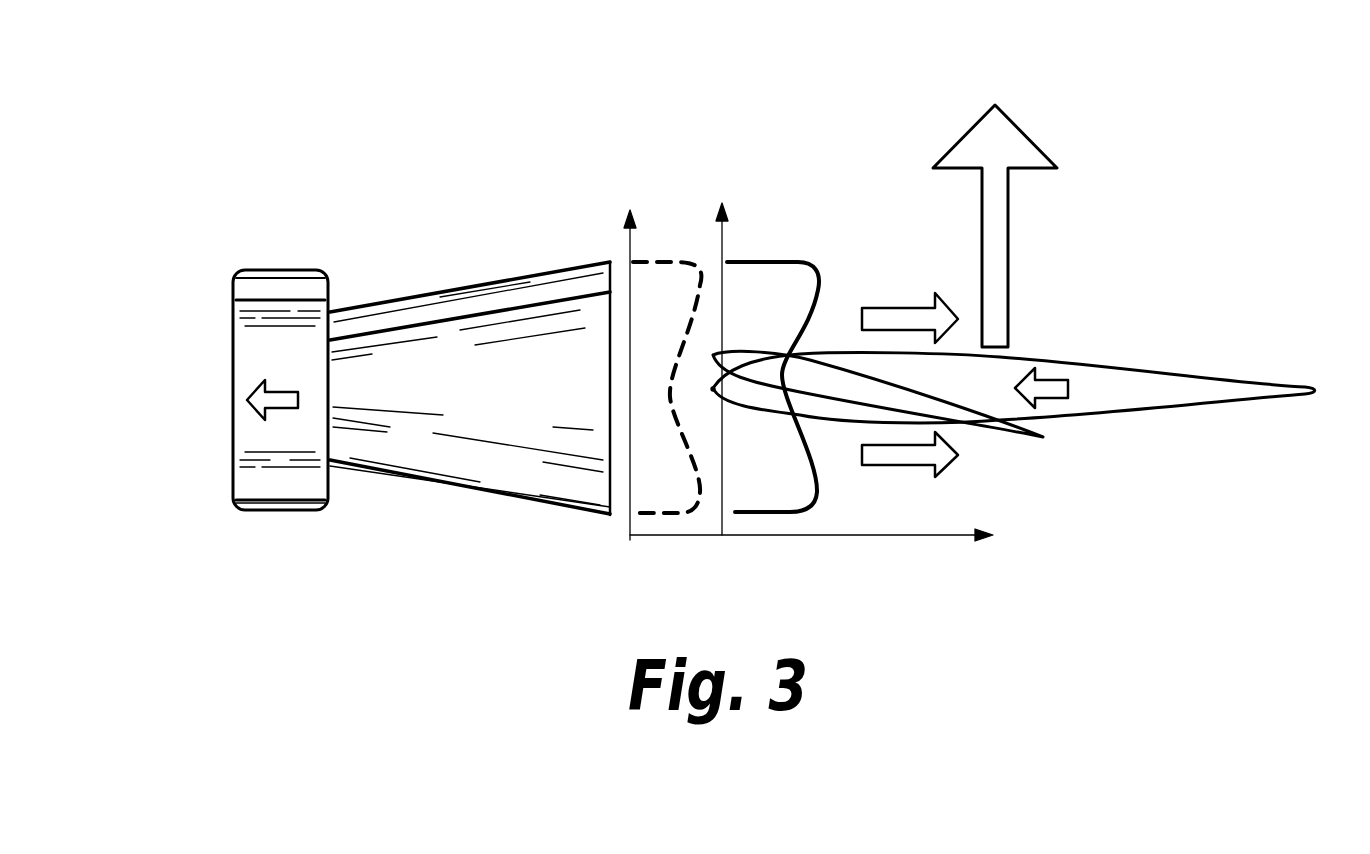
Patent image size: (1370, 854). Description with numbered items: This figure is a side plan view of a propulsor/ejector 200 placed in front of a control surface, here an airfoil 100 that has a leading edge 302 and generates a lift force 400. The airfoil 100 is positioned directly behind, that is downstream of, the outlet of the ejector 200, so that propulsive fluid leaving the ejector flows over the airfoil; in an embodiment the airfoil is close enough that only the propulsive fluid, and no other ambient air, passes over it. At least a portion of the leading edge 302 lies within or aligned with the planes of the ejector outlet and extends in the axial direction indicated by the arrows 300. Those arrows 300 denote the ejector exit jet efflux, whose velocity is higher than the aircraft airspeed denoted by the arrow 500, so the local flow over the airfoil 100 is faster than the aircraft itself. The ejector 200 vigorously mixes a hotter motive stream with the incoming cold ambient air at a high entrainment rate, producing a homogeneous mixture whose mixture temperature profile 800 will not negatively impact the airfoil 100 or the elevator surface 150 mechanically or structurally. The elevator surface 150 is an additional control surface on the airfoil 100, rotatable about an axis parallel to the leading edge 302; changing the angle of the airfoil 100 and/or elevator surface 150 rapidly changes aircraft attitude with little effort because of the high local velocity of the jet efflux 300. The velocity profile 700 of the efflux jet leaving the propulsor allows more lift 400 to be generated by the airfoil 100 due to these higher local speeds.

The airfoil 100 is at (1133, 387).
The elevator surface 150 is at (806, 360).
The propulsor/ejector 200 is at (288, 303).
The arrows (ejector exit jet efflux) 300 is at (932, 320).
The leading edge 302 is at (713, 390).
The lift force 400 is at (993, 153).
The arrow (aircraft airspeed) 500 is at (258, 400).
The velocity profile 700 is at (645, 262).
The mixture temperature profile 800 is at (760, 260).